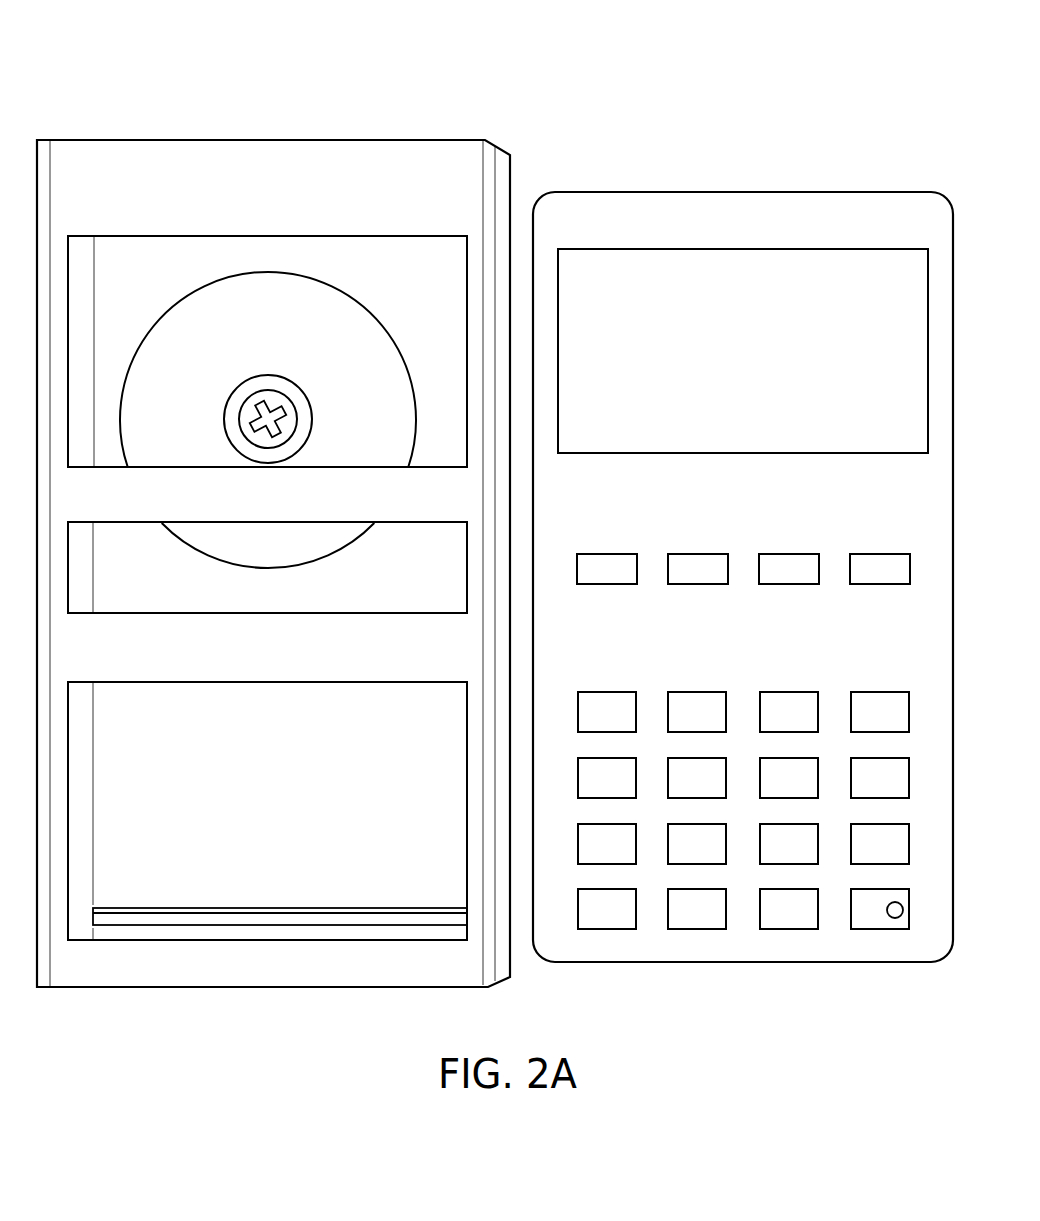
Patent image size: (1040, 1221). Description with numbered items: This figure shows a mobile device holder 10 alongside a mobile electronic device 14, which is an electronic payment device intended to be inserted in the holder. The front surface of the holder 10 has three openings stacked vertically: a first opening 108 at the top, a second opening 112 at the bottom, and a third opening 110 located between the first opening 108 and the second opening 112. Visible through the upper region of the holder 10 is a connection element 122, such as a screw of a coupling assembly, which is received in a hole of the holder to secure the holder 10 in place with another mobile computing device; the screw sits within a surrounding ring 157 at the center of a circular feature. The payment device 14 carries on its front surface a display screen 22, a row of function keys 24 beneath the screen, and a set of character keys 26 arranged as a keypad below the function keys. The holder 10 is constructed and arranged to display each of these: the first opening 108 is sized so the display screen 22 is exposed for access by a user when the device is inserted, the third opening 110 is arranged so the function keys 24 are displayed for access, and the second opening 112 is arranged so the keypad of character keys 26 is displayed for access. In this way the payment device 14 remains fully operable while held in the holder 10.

The mobile device holder 10 is at (90, 110).
The mobile electronic device 14 is at (880, 156).
The display screen 22 is at (868, 249).
The set of function keys 24 is at (881, 554).
The set of character keys 26 is at (834, 948).
The first opening 108 is at (130, 236).
The third opening 110 is at (95, 522).
The second opening 112 is at (121, 682).
The connection element 122 is at (250, 397).
The hub ring 157 is at (306, 395).